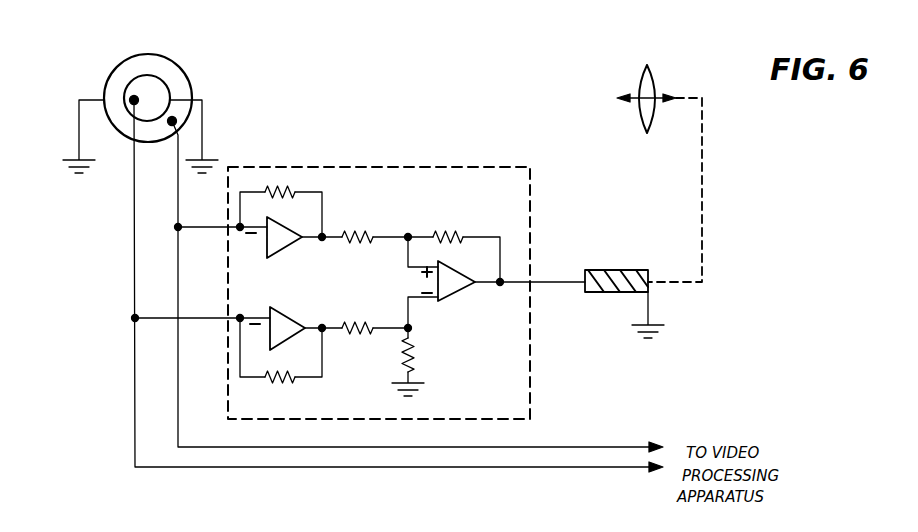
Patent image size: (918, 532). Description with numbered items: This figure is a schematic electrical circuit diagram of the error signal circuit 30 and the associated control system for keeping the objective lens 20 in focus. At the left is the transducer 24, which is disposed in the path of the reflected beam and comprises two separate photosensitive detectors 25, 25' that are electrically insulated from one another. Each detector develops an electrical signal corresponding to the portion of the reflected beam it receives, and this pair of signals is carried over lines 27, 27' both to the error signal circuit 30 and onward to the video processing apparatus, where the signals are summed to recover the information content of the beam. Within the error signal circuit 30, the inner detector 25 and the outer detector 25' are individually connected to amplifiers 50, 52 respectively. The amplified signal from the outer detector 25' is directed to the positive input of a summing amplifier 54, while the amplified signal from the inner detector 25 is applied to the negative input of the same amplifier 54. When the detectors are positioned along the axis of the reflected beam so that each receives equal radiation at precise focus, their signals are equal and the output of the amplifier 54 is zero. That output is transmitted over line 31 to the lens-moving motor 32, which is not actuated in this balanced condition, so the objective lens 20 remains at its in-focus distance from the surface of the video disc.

The objective lens 20 is at (637, 78).
The transducer 24 is at (165, 98).
The inner photosensitive detector 25 is at (180, 91).
The outer photosensitive detector 25' is at (154, 83).
The line 27 is at (378, 286).
The line 27' is at (403, 286).
The error signal circuit 30 is at (333, 167).
The line 31 is at (550, 280).
The lens-moving motor 32 is at (590, 296).
The amplifier 50 is at (285, 316).
The amplifier 52 is at (280, 252).
The summing amplifier 54 is at (448, 296).